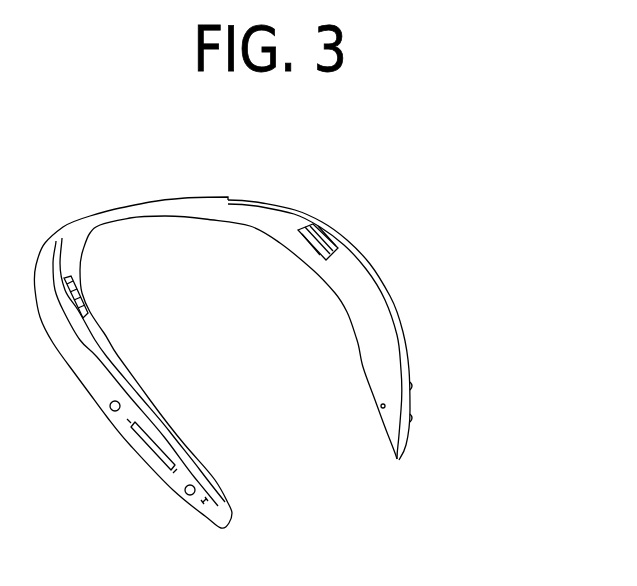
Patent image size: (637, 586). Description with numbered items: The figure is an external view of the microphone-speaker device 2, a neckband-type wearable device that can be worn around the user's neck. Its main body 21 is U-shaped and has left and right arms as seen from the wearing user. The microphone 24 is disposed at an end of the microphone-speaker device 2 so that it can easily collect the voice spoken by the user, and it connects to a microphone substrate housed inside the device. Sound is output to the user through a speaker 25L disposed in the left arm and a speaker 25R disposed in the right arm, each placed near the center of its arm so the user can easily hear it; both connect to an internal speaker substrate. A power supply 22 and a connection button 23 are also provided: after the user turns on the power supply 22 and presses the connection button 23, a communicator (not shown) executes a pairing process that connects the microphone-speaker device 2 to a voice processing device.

The microphone-speaker device 2 is at (252, 323).
The main body 21 is at (139, 200).
The power supply 22 is at (414, 418).
The connection button 23 is at (414, 386).
The microphone 24 is at (381, 406).
The speaker 25L is at (312, 248).
The speaker 25R is at (84, 297).